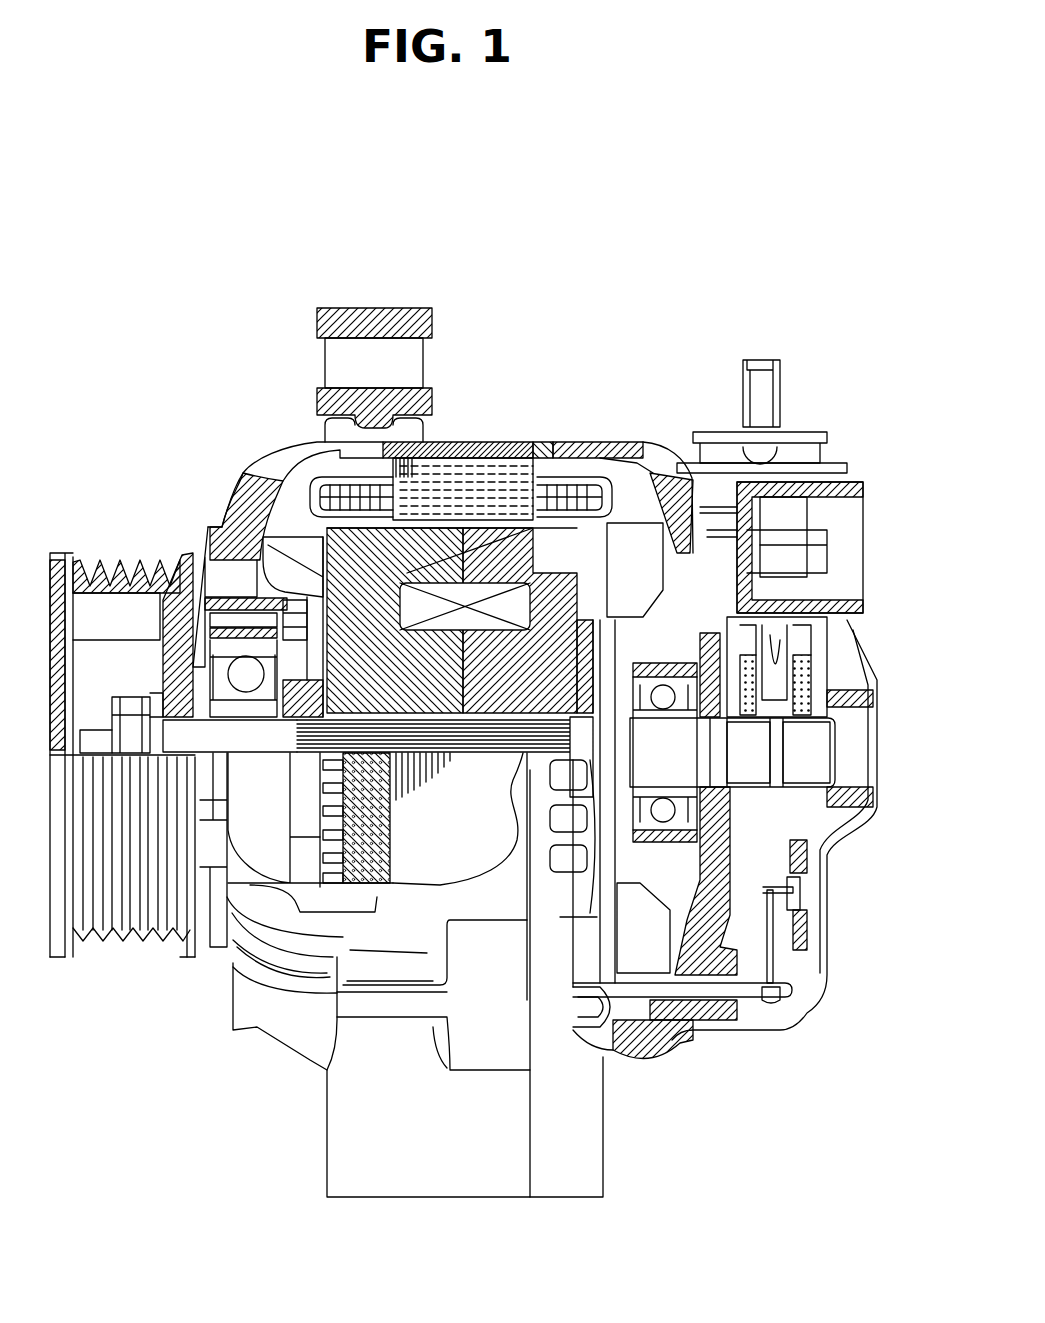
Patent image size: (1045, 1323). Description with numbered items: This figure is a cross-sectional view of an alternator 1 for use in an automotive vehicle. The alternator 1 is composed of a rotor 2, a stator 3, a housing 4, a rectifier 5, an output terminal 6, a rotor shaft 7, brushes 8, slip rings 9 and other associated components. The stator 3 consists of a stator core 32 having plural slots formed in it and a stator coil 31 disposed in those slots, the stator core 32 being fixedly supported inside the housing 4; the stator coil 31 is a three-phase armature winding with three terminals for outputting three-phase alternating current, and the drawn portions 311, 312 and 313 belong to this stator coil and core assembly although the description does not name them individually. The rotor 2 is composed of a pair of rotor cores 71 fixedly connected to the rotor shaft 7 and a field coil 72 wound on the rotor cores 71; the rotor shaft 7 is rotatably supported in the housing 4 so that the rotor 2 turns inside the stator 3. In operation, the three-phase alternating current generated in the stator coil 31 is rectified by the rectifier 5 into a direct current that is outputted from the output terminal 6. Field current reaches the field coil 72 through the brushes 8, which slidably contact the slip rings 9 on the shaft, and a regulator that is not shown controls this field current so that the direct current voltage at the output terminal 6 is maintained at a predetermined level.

The alternator 1 is at (735, 262).
The rotor 2 is at (290, 522).
The stator 3 is at (607, 468).
The stator coil 31 is at (465, 377).
The stator coil end (front) 311 is at (333, 470).
The stator coil end (rear) 312 is at (562, 472).
The stator core 313 is at (447, 456).
The stator core 32 is at (443, 468).
The housing 4 is at (346, 606).
The rotor cores 71 is at (350, 597).
The field coil 72 is at (470, 593).
The rotor shaft 7 is at (190, 733).
The output terminal 6 is at (757, 397).
The brushes 8 is at (745, 687).
The slip rings 9 is at (808, 737).
The rectifier 5 is at (795, 893).